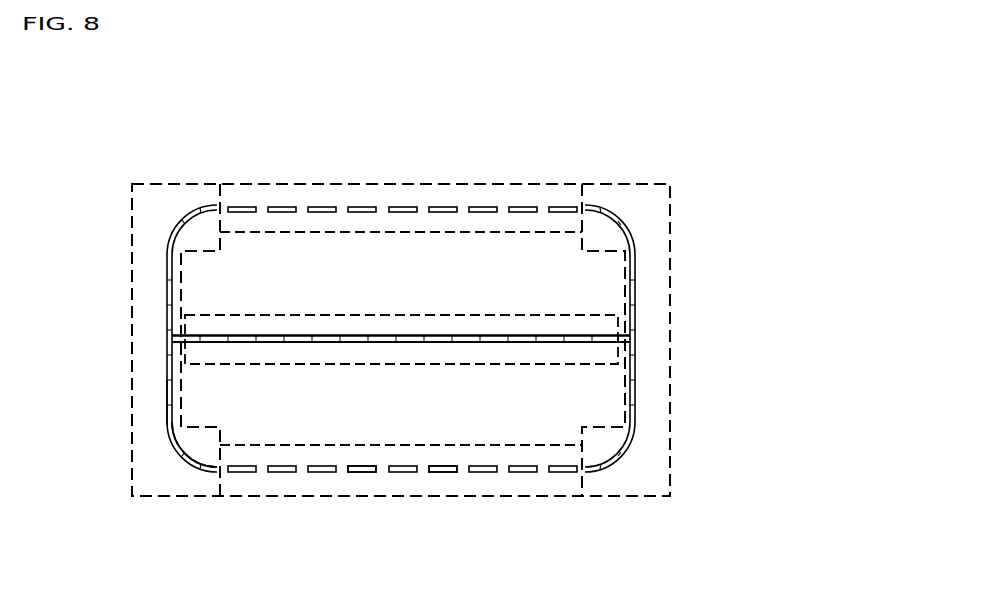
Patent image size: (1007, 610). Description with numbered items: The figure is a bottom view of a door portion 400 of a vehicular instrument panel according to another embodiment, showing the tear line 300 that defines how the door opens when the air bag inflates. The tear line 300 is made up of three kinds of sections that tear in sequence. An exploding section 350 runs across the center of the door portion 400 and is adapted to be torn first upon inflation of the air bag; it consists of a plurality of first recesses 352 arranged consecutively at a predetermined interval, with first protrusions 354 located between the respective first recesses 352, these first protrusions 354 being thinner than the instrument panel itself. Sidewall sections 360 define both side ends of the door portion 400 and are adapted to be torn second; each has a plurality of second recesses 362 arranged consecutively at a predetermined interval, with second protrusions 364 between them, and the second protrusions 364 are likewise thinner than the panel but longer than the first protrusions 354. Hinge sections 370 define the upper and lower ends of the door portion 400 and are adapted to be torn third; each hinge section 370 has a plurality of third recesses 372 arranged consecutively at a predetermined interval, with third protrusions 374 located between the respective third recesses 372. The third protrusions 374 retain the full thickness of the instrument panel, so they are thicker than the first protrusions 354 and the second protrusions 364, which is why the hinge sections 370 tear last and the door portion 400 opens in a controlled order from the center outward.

The tear line 300 is at (808, 237).
The exploding section 350 is at (503, 350).
The first recesses 352 is at (440, 336).
The first protrusions 354 is at (382, 336).
The sidewall sections 360 is at (163, 363).
The second recesses 362 is at (168, 402).
The second protrusions 364 is at (173, 436).
The hinge sections 370 is at (567, 202).
The third recesses 372 is at (442, 473).
The third protrusions 374 is at (382, 473).
The door portion 400 is at (220, 280).